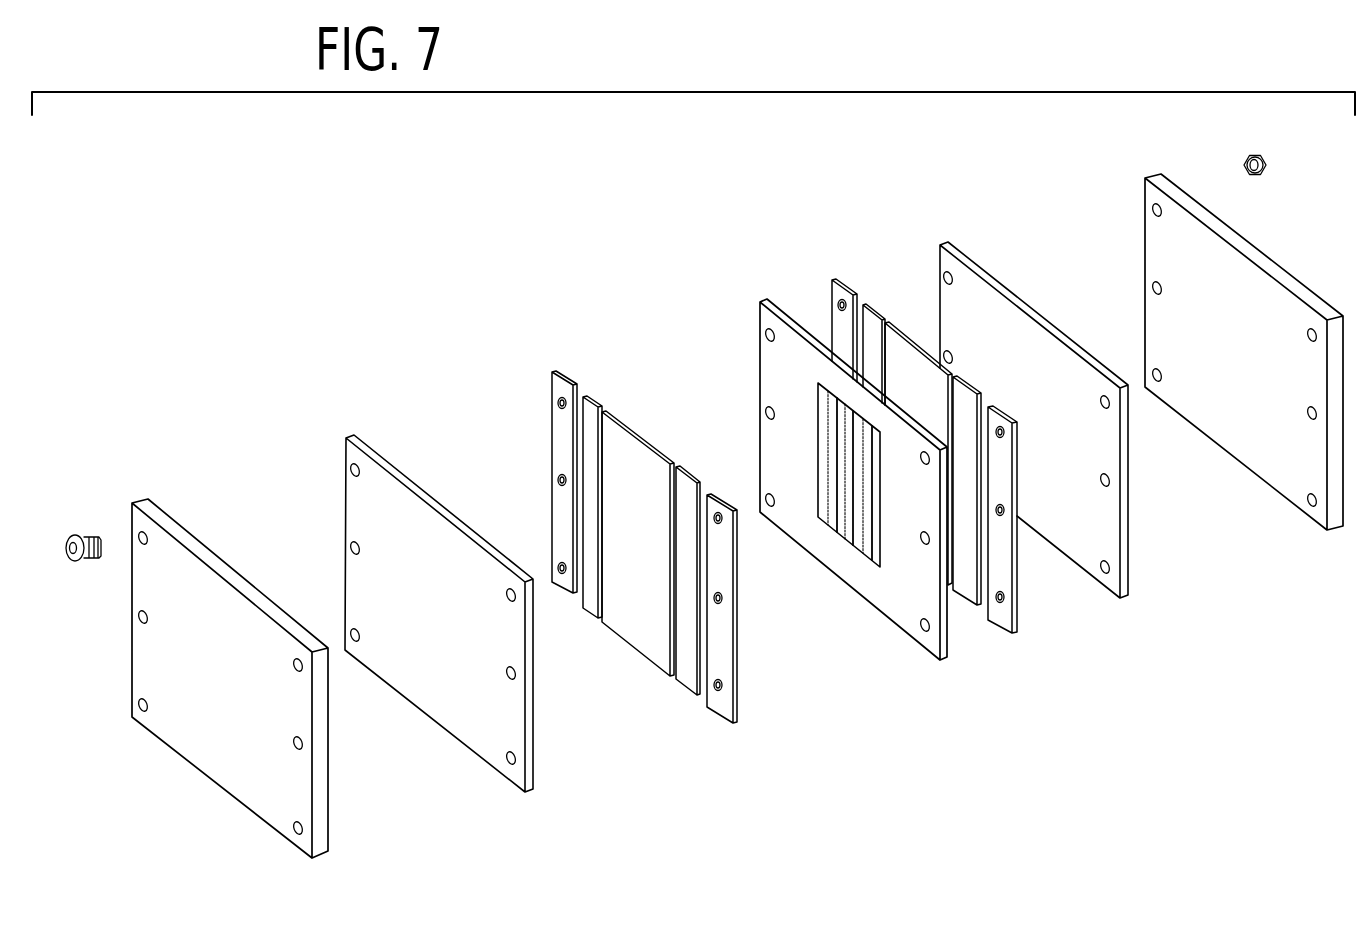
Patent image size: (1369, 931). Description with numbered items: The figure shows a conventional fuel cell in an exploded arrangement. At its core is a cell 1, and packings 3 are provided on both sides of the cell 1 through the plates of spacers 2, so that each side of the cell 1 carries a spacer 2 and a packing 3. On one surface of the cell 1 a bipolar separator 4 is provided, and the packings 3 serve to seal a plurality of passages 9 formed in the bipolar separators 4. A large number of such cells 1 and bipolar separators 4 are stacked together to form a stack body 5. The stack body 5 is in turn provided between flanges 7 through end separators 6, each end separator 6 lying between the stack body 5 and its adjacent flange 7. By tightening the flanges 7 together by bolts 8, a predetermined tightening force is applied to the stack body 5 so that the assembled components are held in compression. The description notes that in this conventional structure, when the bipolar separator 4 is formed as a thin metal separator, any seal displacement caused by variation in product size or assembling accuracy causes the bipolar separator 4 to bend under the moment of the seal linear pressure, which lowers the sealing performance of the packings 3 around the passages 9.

The cell 1 is at (648, 444).
The spacers 2 is at (597, 400).
The packings 3 is at (559, 372).
The bipolar separator 4 is at (772, 300).
The stack body 5 is at (1037, 662).
The end separators 6 is at (357, 436).
The flanges 7 is at (148, 502).
The bolts 8 is at (76, 533).
The passages 9 is at (761, 333).